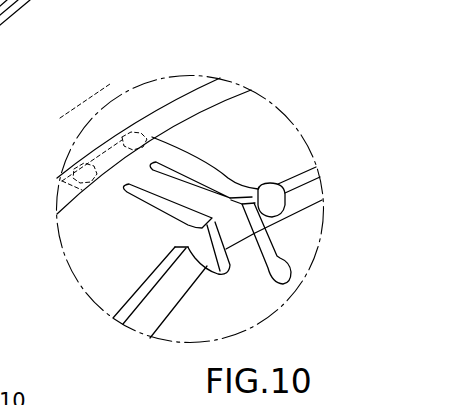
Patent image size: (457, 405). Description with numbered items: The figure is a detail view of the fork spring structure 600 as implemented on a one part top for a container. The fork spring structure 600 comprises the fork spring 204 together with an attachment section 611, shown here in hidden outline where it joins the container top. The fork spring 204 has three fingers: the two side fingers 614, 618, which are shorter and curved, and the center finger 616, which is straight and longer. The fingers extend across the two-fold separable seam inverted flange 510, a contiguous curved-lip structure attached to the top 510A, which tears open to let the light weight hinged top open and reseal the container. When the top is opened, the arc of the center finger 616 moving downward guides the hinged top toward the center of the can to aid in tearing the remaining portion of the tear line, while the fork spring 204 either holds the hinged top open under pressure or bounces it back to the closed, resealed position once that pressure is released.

The fork spring structure 600 is at (271, 59).
The two-fold separable seam inverted flange 510 is at (274, 125).
The top 510A is at (311, 209).
The fork spring 204 is at (180, 148).
The attachment section 611 is at (122, 135).
The side finger 614 is at (220, 270).
The center finger 616 is at (278, 283).
The side finger 618 is at (278, 207).